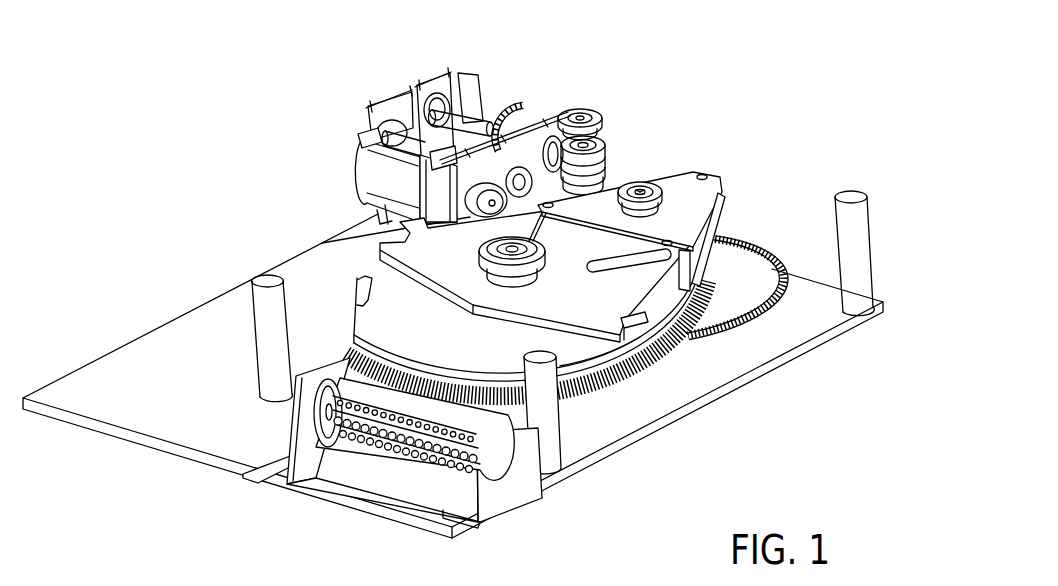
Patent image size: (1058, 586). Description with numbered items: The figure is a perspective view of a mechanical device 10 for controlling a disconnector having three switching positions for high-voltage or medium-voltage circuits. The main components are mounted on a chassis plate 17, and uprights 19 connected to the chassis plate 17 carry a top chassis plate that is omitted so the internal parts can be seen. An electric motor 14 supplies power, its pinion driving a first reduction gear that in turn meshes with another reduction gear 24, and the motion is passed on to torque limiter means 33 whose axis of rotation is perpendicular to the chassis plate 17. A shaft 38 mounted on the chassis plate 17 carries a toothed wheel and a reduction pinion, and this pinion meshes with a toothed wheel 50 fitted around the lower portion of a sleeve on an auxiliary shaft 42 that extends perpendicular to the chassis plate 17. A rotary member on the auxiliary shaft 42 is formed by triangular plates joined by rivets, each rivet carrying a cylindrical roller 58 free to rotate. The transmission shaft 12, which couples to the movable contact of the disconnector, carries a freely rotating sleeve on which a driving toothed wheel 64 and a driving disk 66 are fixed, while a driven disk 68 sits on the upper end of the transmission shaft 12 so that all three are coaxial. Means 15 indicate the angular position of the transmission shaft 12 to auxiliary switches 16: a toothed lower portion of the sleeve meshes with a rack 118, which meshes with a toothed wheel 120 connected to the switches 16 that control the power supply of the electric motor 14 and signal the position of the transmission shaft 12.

The mechanical device 10 is at (755, 98).
The transmission shaft 12 is at (403, 239).
The electric motor 14 is at (380, 177).
The means for indicating the angular position 15 is at (258, 489).
The auxiliary switches 16 is at (385, 450).
The chassis plate 17 is at (815, 348).
The uprights 19 is at (470, 76).
The reduction gear 24 is at (520, 98).
The torque limiter means 33 is at (609, 146).
The shaft 38 is at (581, 114).
The auxiliary shaft 42 is at (640, 188).
The toothed wheel 50 is at (760, 248).
The cylindrical roller 58 is at (722, 193).
The driving toothed wheel 64 is at (623, 373).
The driving disk 66 is at (440, 340).
The driven disk 68 is at (640, 303).
The rack 118 is at (277, 463).
The toothed wheel 120 is at (292, 407).